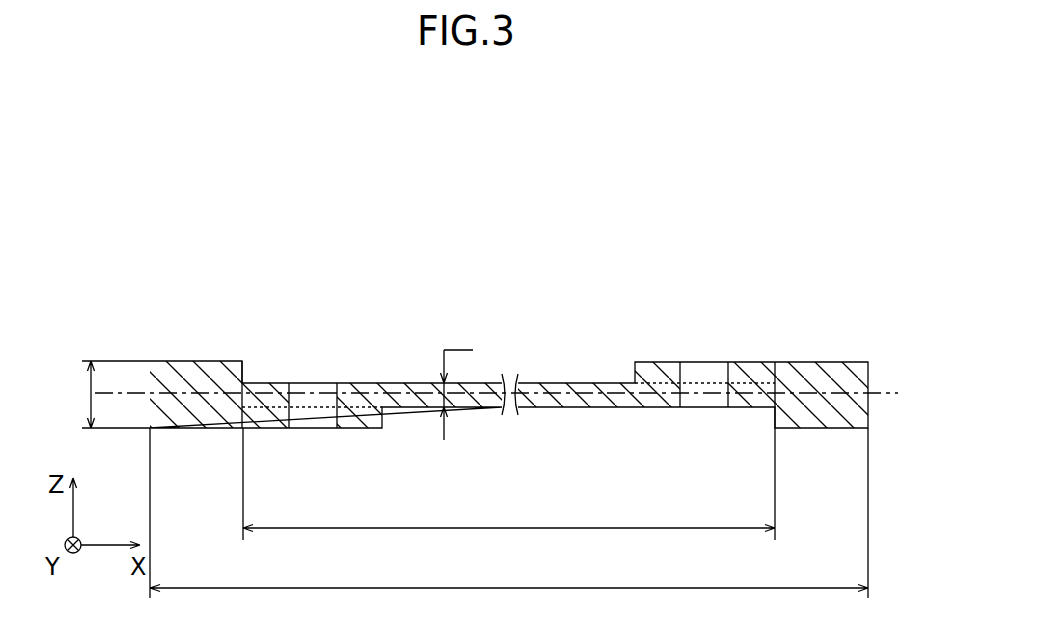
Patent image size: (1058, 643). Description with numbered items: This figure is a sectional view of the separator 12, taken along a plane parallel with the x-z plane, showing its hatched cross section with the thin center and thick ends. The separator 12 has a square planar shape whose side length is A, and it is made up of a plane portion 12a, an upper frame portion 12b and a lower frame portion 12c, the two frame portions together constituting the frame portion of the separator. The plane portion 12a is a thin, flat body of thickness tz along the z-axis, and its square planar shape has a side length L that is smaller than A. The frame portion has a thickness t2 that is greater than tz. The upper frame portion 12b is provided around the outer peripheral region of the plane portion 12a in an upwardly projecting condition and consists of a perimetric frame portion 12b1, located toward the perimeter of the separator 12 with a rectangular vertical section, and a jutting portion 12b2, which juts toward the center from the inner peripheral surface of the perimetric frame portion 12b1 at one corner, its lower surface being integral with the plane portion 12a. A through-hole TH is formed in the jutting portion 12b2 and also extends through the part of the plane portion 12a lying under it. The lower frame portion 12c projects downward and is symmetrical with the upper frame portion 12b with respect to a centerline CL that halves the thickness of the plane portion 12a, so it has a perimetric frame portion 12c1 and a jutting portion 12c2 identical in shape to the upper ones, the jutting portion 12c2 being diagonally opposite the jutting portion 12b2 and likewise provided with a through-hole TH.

The separator 12 is at (624, 237).
The plane portion 12a is at (543, 390).
The upper frame portion 12b is at (208, 305).
The perimetric frame portion 12b1 is at (185, 372).
The jutting portion 12b2 is at (670, 368).
The lower frame portion 12c is at (191, 472).
The perimetric frame portion 12c1 is at (793, 420).
The jutting portion 12c2 is at (352, 425).
The through-hole TH is at (726, 373).
The centerline CL is at (516, 393).
The thickness of the frame portion t2 is at (106, 394).
The thickness of the plane portion tz is at (457, 380).
The length of one side of the plane portion L is at (509, 484).
The length of one side of the separator A is at (509, 513).